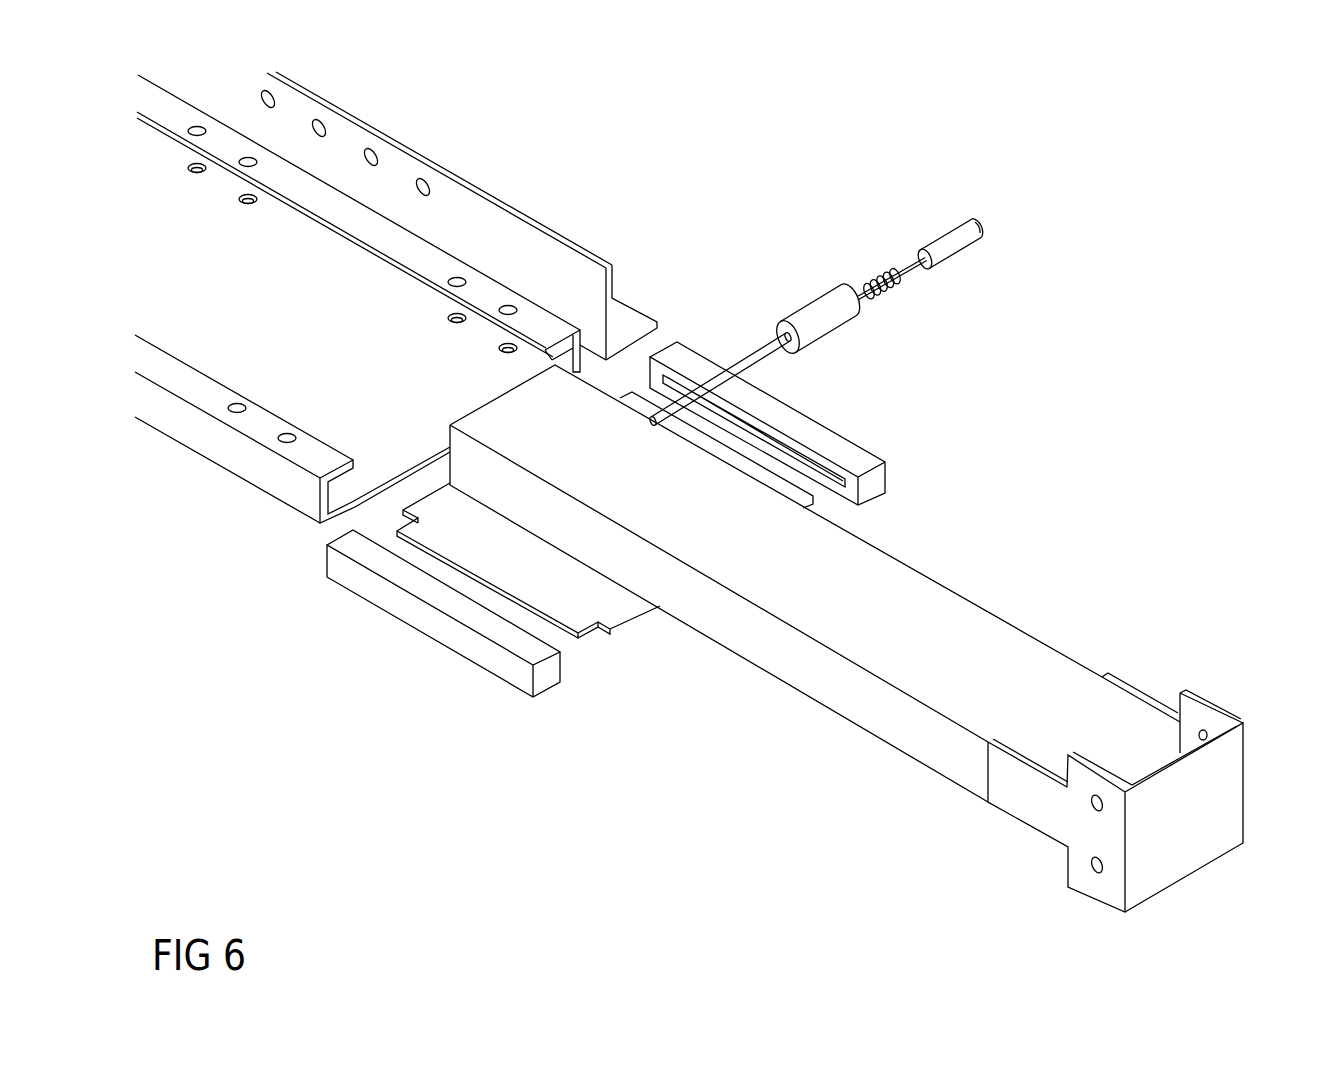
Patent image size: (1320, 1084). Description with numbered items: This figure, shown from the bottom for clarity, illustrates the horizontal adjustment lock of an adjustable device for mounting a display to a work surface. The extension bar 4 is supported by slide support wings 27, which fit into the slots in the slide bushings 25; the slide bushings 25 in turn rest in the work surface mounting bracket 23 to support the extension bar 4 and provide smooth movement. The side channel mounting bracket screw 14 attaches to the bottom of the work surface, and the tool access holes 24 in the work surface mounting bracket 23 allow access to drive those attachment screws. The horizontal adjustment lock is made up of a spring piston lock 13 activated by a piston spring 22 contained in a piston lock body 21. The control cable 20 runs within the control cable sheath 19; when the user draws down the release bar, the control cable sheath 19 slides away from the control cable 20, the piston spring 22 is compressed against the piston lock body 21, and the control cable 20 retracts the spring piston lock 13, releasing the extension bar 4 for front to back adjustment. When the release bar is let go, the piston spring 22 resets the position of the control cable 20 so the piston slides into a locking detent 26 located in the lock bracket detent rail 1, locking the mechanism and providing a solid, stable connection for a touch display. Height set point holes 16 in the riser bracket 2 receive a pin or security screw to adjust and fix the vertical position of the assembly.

The lock bracket detent rail 1 is at (458, 216).
The riser bracket 2 is at (1115, 776).
The extension bar 4 is at (823, 703).
The spring piston lock 13 is at (969, 255).
The side channel mounting bracket screw 14 is at (251, 207).
The height set point holes 16 is at (1087, 871).
The control cable sheath 19 is at (755, 366).
The control cable 20 is at (917, 272).
The piston lock body 21 is at (841, 337).
The piston spring 22 is at (873, 268).
The work surface mounting bracket 23 is at (218, 462).
The tool access holes 24 is at (247, 166).
The slide bushings 25 is at (418, 621).
The locking detent 26 is at (426, 196).
The slide support wings 27 is at (582, 653).